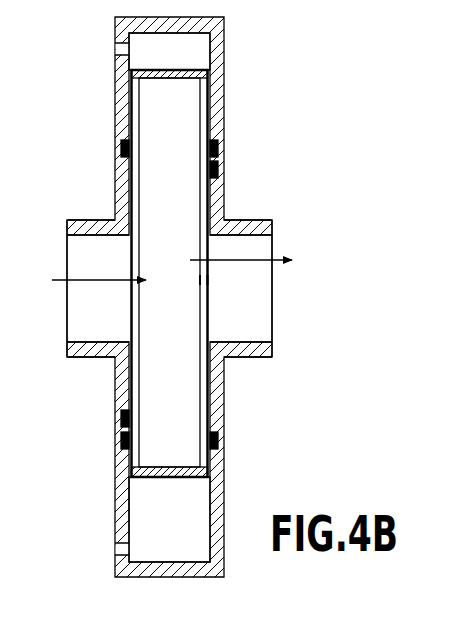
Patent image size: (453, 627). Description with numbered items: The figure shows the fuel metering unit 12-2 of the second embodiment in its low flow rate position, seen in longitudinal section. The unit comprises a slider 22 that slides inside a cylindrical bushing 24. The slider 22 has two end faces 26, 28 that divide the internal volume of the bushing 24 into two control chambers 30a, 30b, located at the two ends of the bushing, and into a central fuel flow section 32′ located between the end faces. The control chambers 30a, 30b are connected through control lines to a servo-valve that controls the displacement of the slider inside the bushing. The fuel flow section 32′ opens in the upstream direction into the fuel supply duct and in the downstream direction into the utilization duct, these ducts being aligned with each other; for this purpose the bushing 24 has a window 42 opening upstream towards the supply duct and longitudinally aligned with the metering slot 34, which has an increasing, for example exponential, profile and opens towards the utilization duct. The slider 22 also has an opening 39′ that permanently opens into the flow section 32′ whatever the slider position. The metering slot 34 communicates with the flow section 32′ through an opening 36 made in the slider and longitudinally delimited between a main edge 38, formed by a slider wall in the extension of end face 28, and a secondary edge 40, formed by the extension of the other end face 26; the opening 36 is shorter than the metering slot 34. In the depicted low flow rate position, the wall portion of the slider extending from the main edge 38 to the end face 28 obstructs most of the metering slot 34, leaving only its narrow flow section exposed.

The fuel metering unit 12-2 is at (259, 167).
The bushing 24 is at (229, 93).
The window 42 is at (73, 238).
The metering slot 34 is at (248, 238).
The control chamber 30a is at (187, 62).
The control chamber 30b is at (187, 530).
The slider 22 is at (196, 414).
The fuel flow section 32′ is at (186, 309).
The end face 26 is at (148, 72).
The end face 28 is at (152, 472).
The main edge 38 is at (204, 280).
The opening 39′ is at (144, 168).
The secondary edge 40 is at (196, 203).
The opening 36 is at (200, 204).